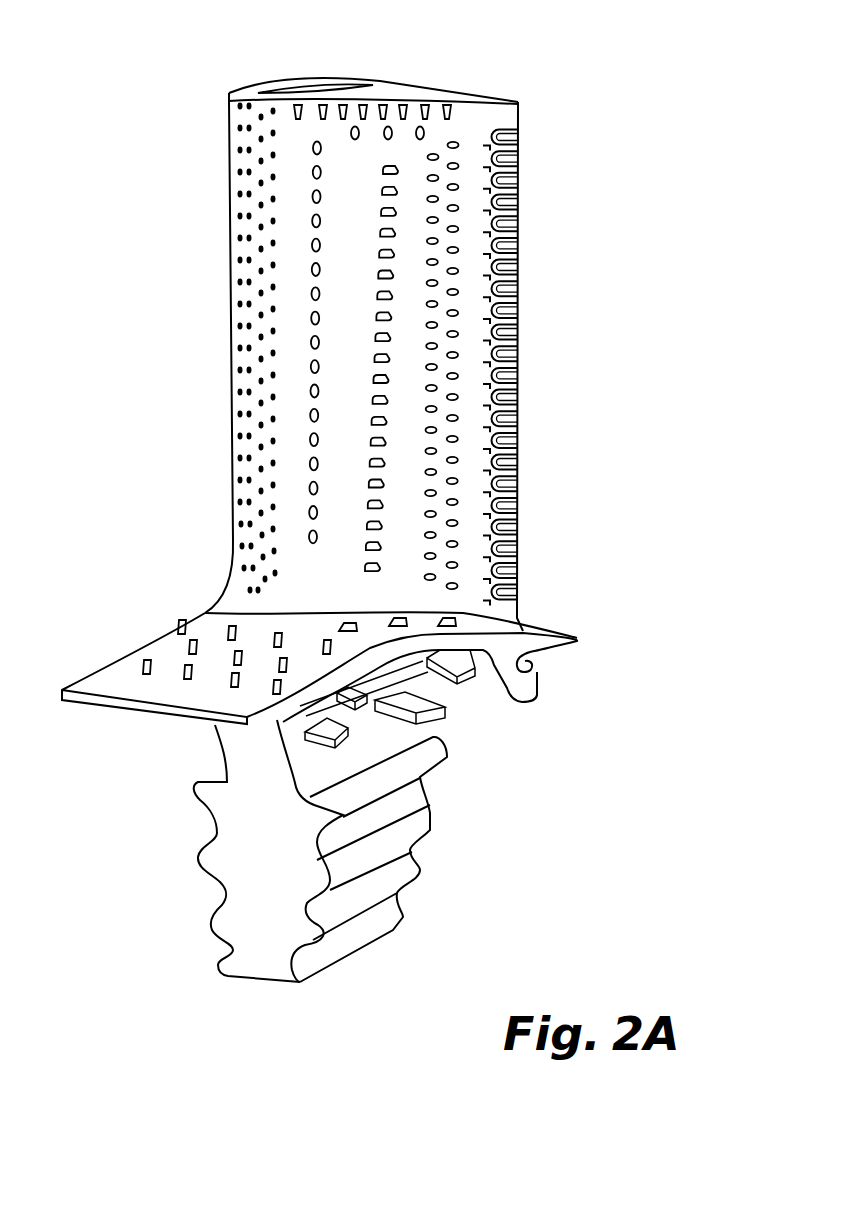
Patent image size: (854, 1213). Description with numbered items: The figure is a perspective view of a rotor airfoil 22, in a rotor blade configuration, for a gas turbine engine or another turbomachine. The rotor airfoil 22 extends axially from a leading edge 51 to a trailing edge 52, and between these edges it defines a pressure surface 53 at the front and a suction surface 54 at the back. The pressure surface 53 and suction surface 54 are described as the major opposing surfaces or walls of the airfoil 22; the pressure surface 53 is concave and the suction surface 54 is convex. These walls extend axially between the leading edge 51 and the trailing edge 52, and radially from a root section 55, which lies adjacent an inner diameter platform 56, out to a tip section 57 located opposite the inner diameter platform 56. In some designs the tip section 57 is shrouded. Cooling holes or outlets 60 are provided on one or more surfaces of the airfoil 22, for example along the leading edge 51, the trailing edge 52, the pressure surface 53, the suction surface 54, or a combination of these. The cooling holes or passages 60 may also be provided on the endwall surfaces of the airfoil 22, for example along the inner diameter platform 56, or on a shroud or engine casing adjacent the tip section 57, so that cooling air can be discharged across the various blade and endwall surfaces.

The rotor airfoil 22 is at (122, 100).
The leading edge 51 is at (229, 252).
The trailing edge 52 is at (518, 368).
The pressure surface 53 is at (348, 376).
The suction surface 54 is at (456, 85).
The root section 55 is at (257, 606).
The inner diameter platform 56 is at (137, 643).
The tip section 57 is at (402, 100).
The cooling holes 60 is at (313, 196).